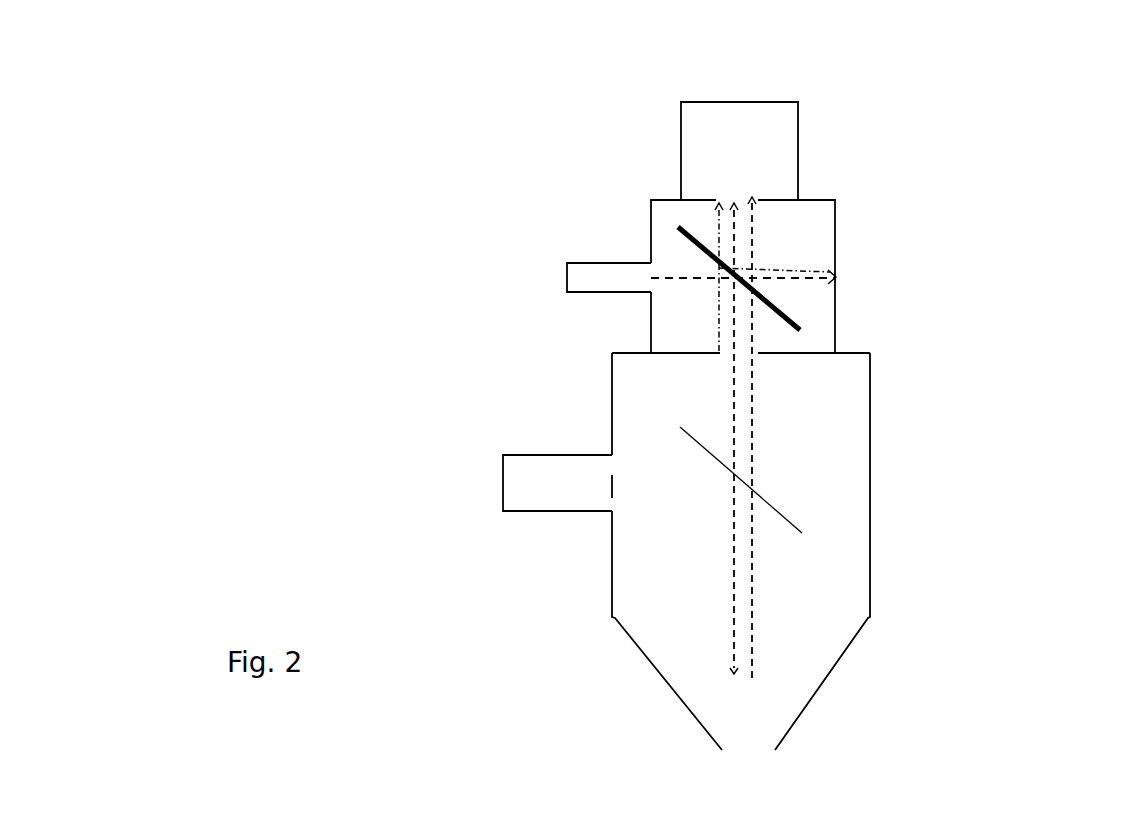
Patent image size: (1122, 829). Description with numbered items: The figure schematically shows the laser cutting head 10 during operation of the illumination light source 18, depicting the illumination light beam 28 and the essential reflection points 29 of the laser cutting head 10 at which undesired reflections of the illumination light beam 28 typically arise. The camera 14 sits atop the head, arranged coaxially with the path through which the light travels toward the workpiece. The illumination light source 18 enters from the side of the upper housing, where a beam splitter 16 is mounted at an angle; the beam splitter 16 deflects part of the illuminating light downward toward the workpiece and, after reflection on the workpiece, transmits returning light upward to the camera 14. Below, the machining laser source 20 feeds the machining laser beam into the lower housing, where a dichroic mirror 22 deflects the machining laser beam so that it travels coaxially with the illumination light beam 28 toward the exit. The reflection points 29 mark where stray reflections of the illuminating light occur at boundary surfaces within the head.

The laser cutting head 10 is at (1002, 80).
The camera 14 is at (681, 140).
The beam splitter 16 is at (792, 318).
The illumination light source 18 is at (567, 278).
The machining laser source 20 is at (503, 490).
The dichroic mirror 22 is at (797, 528).
The illumination light beam 28 is at (672, 248).
The reflection points 29 is at (838, 275).